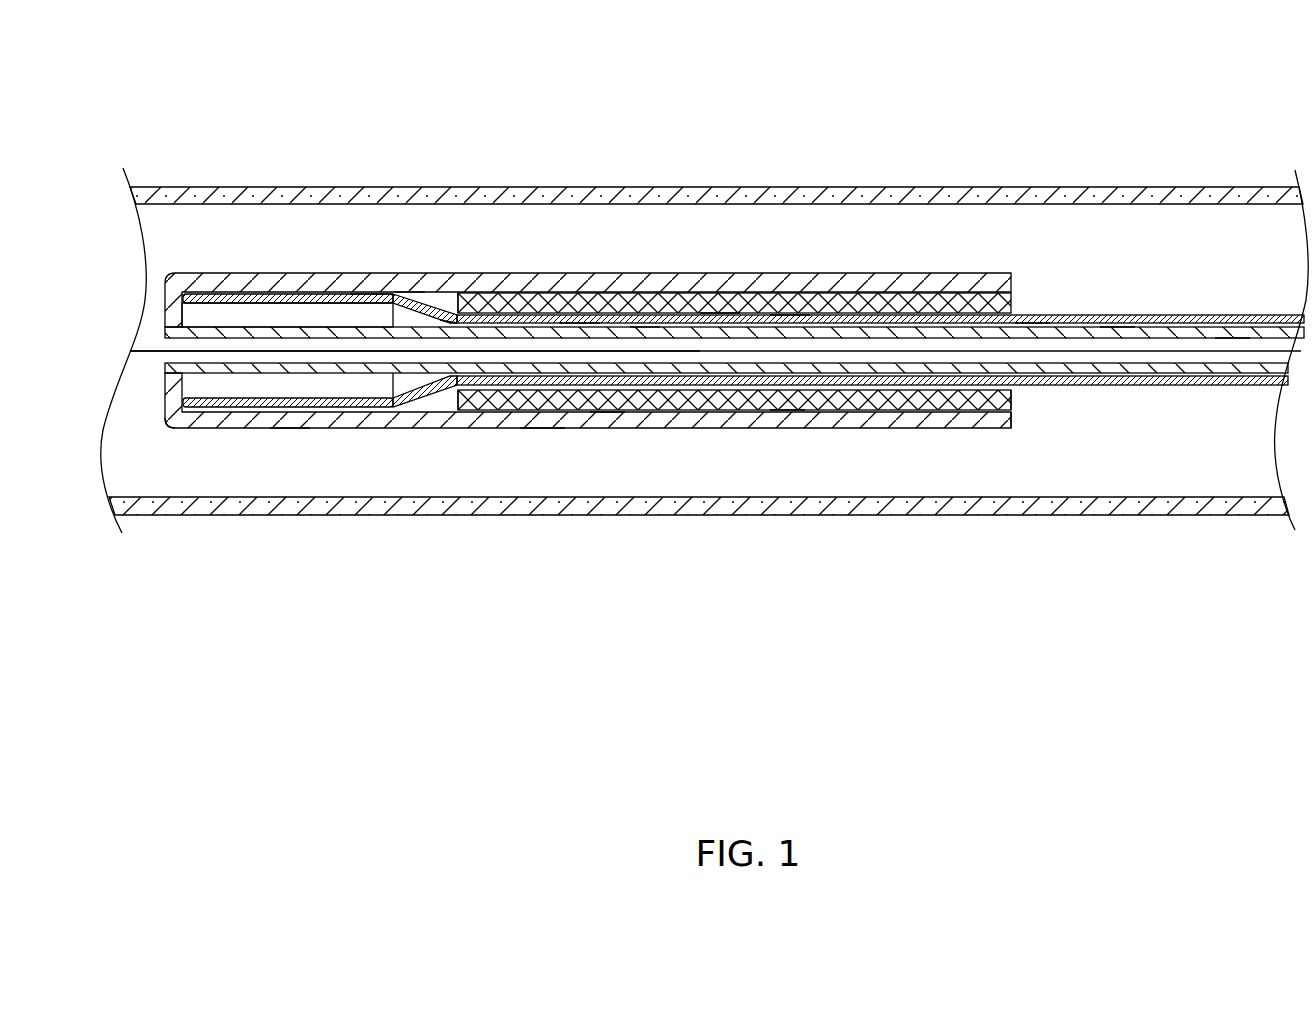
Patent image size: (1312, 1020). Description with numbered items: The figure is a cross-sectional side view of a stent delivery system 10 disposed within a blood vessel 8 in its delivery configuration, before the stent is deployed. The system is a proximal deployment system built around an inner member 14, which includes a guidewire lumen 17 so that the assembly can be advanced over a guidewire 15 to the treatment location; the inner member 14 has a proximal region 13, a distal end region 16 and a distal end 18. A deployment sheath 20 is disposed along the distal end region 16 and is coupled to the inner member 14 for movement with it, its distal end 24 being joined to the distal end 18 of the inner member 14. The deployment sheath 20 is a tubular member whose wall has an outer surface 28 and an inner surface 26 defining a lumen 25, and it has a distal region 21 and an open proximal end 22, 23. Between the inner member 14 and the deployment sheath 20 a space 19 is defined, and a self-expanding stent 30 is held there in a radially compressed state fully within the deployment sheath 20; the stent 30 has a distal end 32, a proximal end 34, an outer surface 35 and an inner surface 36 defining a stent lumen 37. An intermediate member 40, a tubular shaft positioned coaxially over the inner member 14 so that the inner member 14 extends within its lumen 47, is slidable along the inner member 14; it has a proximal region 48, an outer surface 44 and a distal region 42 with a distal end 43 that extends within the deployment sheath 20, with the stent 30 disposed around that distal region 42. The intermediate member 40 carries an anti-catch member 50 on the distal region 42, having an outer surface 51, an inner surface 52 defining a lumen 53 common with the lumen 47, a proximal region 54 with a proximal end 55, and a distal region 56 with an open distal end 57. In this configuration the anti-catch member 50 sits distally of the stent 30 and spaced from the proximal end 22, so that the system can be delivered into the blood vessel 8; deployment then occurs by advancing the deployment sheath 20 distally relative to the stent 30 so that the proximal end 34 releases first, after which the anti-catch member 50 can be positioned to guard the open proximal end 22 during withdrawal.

The blood vessel 8 is at (308, 180).
The stent delivery system 10 is at (686, 222).
The proximal region 13 is at (1233, 325).
The inner member 14 is at (1032, 322).
The guidewire 15 is at (142, 332).
The distal end region 16 is at (581, 312).
The guidewire lumen 17 is at (238, 342).
The distal end 18 is at (190, 294).
The space 19 is at (432, 297).
The deployment sheath 20 is at (607, 426).
The distal region 21 is at (877, 438).
The proximal end 22 is at (1005, 428).
The proximal end 23 is at (288, 438).
The distal end 24 is at (165, 430).
The lumen 25 is at (405, 418).
The inner surface 26 is at (445, 408).
The outer surface 28 is at (542, 428).
The stent 30 is at (665, 400).
The distal end 32 is at (458, 415).
The proximal end 34 is at (1010, 400).
The outer surface 35 is at (786, 412).
The inner surface 36 is at (748, 387).
The stent lumen 37 is at (718, 315).
The intermediate member 40 is at (870, 309).
The distal region 42 is at (788, 309).
The distal end 43 is at (480, 298).
The outer surface 44 is at (645, 322).
The lumen 47 is at (1115, 327).
The proximal region 48 is at (1180, 304).
The anti-catch member 50 is at (366, 287).
The outer surface 51 is at (387, 295).
The inner surface 52 is at (343, 302).
The lumen 53 is at (215, 313).
The proximal region 54 is at (411, 280).
The proximal end 55 is at (452, 312).
The distal region 56 is at (225, 422).
The distal end 57 is at (188, 403).